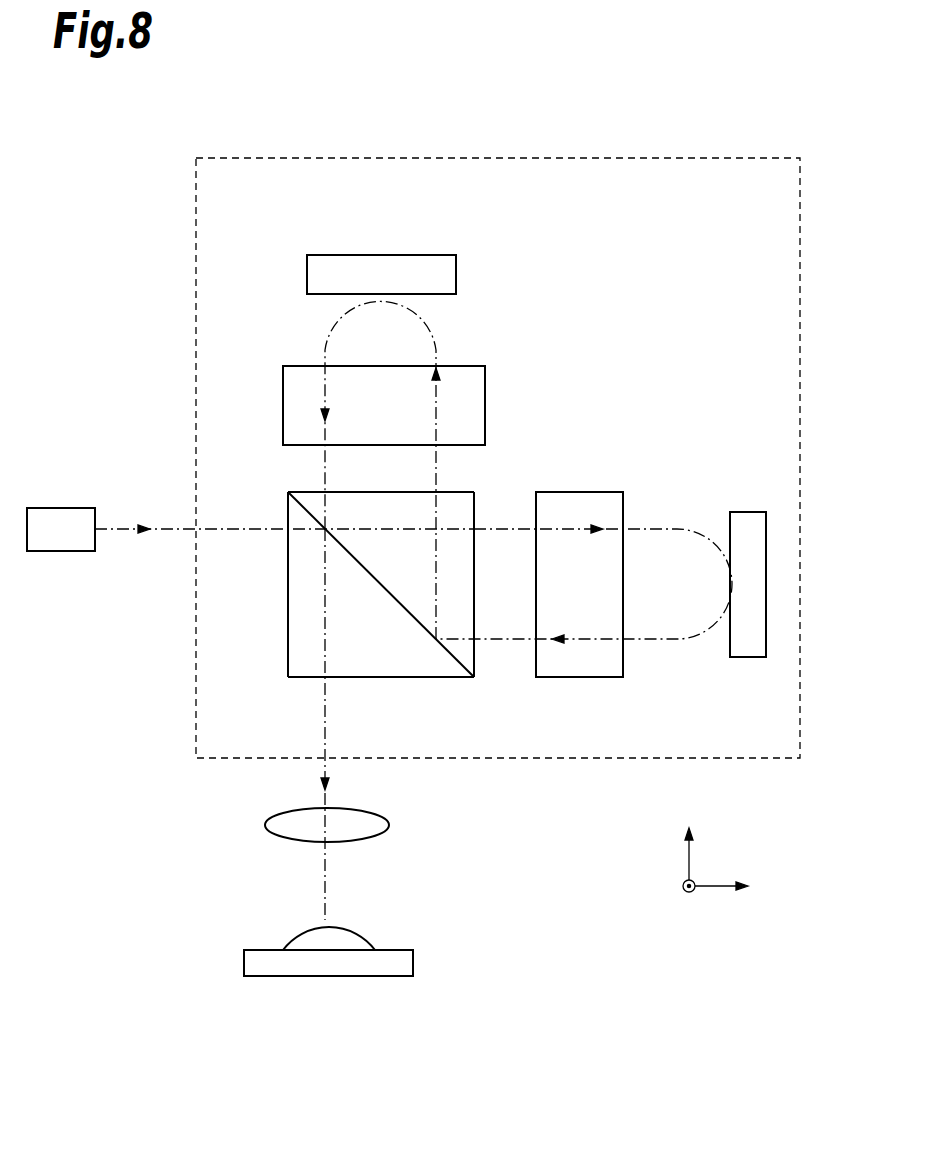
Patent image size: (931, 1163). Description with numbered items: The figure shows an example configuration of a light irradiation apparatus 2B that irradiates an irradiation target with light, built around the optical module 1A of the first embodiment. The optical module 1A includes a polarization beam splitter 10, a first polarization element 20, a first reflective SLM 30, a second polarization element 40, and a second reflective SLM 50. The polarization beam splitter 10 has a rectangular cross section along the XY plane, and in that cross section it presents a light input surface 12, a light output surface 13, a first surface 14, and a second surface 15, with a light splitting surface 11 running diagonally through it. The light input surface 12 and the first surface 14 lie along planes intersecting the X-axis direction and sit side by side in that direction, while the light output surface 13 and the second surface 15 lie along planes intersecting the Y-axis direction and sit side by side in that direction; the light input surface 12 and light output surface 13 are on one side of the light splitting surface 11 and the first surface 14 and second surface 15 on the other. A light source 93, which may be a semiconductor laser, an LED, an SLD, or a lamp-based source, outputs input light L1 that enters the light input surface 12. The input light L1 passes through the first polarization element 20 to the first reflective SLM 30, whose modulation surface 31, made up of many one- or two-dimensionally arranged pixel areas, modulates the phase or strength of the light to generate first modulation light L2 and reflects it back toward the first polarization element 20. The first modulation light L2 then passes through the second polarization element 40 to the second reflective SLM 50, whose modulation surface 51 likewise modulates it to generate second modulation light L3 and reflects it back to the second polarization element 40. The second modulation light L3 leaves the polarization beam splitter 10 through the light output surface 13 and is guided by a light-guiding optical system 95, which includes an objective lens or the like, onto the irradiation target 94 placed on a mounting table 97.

The light irradiation apparatus 2B is at (125, 135).
The optical module 1A is at (612, 155).
The polarization beam splitter 10 is at (428, 688).
The light splitting surface 11 is at (377, 583).
The light input surface 12 is at (286, 631).
The light output surface 13 is at (308, 677).
The first surface 14 is at (476, 653).
The second surface 15 is at (462, 492).
The first polarization element 20 is at (586, 482).
The first reflective SLM 30 is at (749, 502).
The modulation surface 31 is at (727, 527).
The second polarization element 40 is at (274, 409).
The second reflective SLM 50 is at (393, 244).
The modulation surface 51 is at (440, 294).
The light source 93 is at (67, 552).
The irradiation target 94 is at (345, 935).
The light-guiding optical system 95 is at (390, 826).
The mounting table 97 is at (413, 963).
The input light L1 is at (172, 532).
The first modulation light L2 is at (651, 640).
The second modulation light L3 is at (320, 350).